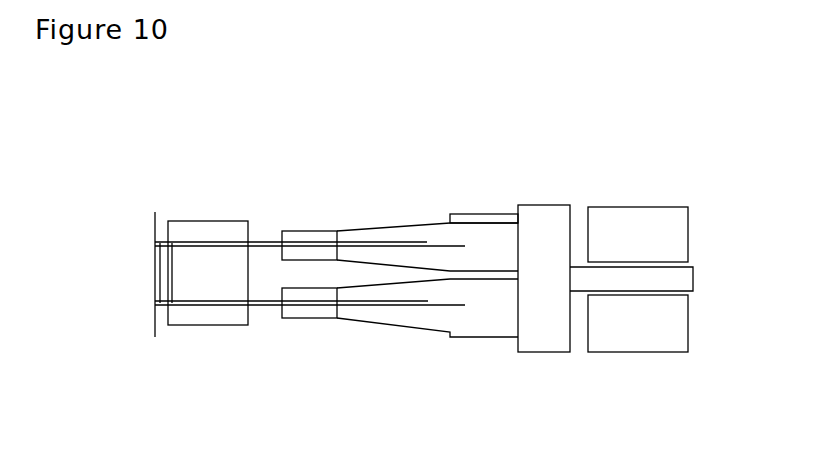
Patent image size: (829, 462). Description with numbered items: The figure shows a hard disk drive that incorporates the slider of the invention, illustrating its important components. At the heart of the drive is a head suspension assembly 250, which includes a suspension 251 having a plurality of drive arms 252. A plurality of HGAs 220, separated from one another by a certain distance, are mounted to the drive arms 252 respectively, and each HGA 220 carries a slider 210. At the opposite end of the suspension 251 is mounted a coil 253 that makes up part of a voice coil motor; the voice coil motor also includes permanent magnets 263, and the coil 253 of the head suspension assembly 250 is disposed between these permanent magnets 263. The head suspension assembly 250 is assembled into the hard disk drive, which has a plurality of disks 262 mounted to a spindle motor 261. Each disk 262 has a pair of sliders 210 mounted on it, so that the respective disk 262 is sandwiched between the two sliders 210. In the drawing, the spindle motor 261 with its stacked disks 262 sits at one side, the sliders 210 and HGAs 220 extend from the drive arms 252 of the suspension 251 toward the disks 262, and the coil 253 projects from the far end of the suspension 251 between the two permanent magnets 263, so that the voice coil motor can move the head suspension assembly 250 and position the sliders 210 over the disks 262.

The slider 210 is at (275, 232).
The HGA 220 is at (390, 226).
The head suspension assembly 250 is at (549, 188).
The suspension 251 is at (545, 353).
The drive arm 252 is at (466, 213).
The coil 253 is at (693, 280).
The spindle motor 261 is at (192, 221).
The disk 262 is at (262, 240).
The permanent magnet 263 is at (633, 207).